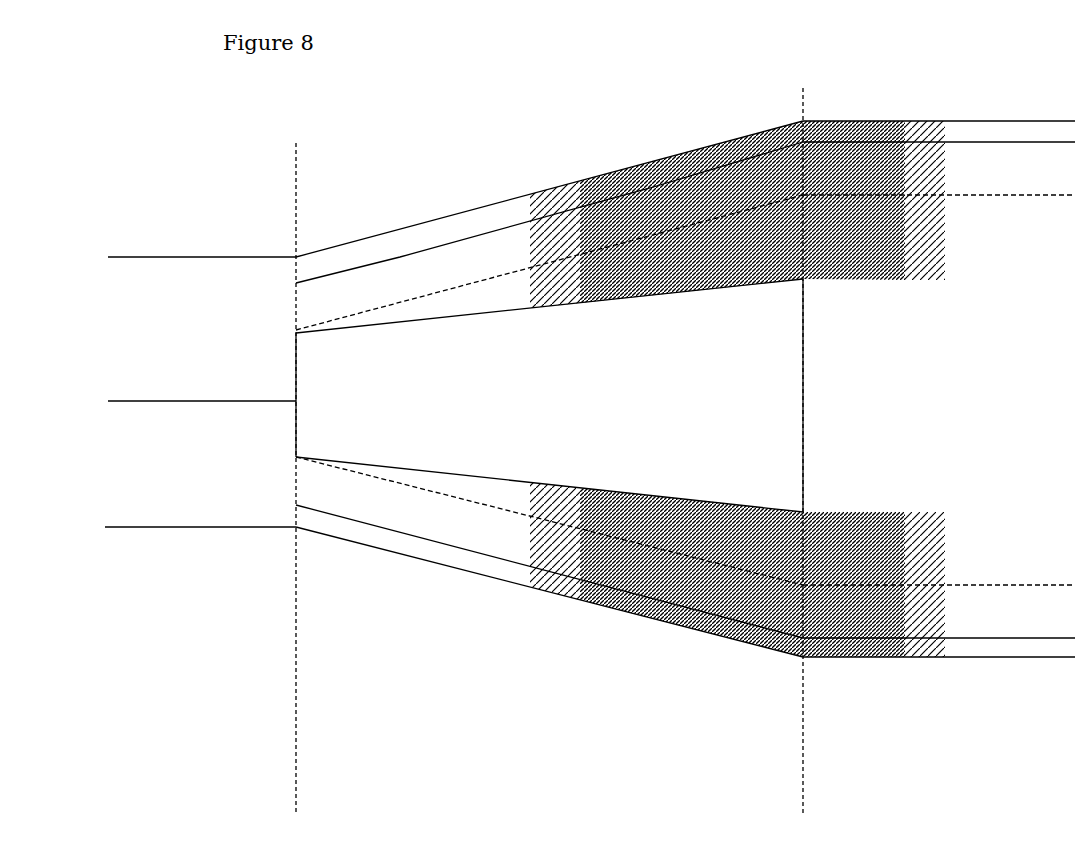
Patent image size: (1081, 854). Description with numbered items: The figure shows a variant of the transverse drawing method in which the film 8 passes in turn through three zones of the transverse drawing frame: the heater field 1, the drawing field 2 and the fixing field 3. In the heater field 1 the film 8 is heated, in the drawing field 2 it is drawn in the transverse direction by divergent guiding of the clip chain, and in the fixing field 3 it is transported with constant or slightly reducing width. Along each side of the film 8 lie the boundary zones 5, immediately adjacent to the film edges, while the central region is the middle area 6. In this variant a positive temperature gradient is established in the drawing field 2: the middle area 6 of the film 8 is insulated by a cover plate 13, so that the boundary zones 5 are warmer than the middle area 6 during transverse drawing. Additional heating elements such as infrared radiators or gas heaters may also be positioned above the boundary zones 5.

The heater field 1 is at (200, 477).
The drawing field 2 is at (549, 419).
The fixing field 3 is at (939, 451).
The boundary zones 5 is at (487, 245).
The middle area 6 is at (648, 292).
The film 8 is at (265, 355).
The cover plate 13 is at (717, 277).